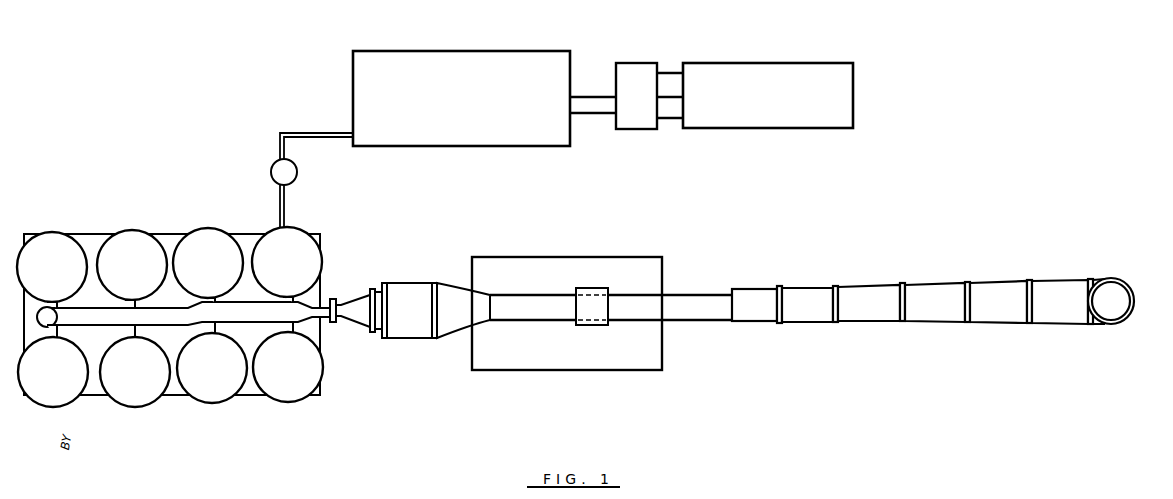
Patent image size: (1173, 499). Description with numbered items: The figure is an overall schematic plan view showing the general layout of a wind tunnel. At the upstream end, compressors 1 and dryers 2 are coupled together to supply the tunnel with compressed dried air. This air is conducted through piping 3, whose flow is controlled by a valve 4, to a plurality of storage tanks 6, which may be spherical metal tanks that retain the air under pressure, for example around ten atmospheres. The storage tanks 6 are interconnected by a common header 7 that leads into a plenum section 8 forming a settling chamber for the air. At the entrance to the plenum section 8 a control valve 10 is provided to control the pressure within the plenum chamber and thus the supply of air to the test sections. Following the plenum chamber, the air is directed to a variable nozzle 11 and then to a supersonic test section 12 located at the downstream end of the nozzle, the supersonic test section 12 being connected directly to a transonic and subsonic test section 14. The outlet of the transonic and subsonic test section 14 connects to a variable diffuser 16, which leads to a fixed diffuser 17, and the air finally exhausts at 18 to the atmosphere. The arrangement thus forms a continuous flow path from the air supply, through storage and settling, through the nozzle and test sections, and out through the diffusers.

The compressors 1 is at (522, 57).
The dryers 2 is at (727, 70).
The piping 3 is at (313, 136).
The valve 4 is at (271, 176).
The storage tanks 6 is at (305, 381).
The common header 7 is at (277, 314).
The plenum section 8 is at (402, 290).
The control valve 10 is at (352, 318).
The variable nozzle 11 is at (503, 294).
The supersonic test section 12 is at (557, 294).
The transonic and subsonic test section 14 is at (600, 289).
The variable diffuser 16 is at (680, 292).
The fixed diffuser 17 is at (990, 283).
The exhaust 18 is at (1113, 278).